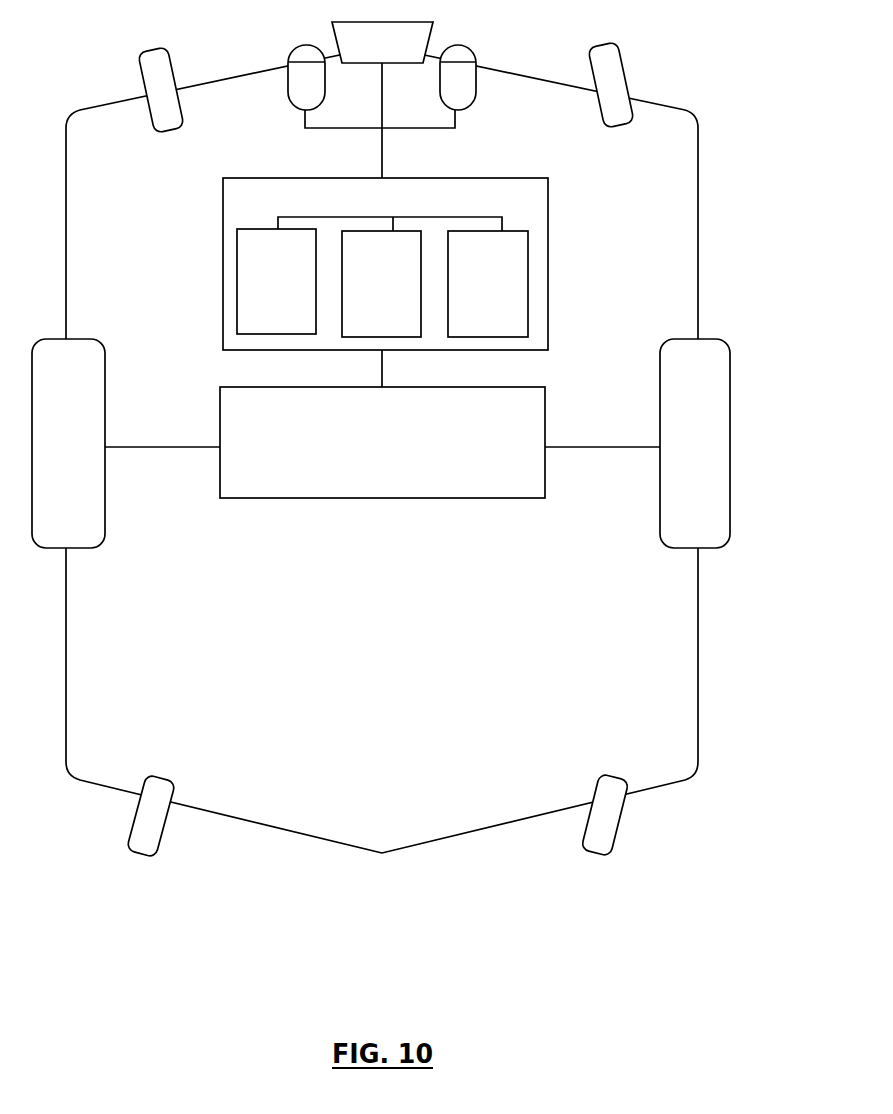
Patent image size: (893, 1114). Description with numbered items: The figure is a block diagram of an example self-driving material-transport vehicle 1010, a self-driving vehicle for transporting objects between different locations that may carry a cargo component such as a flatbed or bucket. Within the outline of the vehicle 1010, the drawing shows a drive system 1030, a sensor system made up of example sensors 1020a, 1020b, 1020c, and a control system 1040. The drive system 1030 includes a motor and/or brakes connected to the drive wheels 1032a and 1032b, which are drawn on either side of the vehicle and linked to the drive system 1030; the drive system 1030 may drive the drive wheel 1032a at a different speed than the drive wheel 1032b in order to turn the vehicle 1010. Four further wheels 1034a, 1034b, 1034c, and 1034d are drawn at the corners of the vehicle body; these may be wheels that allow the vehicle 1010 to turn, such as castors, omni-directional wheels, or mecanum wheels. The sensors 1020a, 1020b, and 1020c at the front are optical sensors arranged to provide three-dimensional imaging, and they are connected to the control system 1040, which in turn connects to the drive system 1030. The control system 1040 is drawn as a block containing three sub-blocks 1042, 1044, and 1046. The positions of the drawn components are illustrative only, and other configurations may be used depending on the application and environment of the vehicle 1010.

The self-driving material-transport vehicle 1010 is at (700, 138).
The sensor 1020a is at (382, 42).
The sensor 1020b is at (287, 52).
The sensor 1020c is at (475, 51).
The drive system 1030 is at (382, 442).
The drive wheel 1032a is at (68, 443).
The drive wheel 1032b is at (695, 443).
The wheel 1034a is at (140, 59).
The wheel 1034b is at (622, 53).
The wheel 1034c is at (168, 820).
The wheel 1034d is at (622, 820).
The control system 1040 is at (385, 264).
The processor 1042 is at (381, 284).
The memory 1044 is at (276, 281).
The communication module 1046 is at (488, 284).